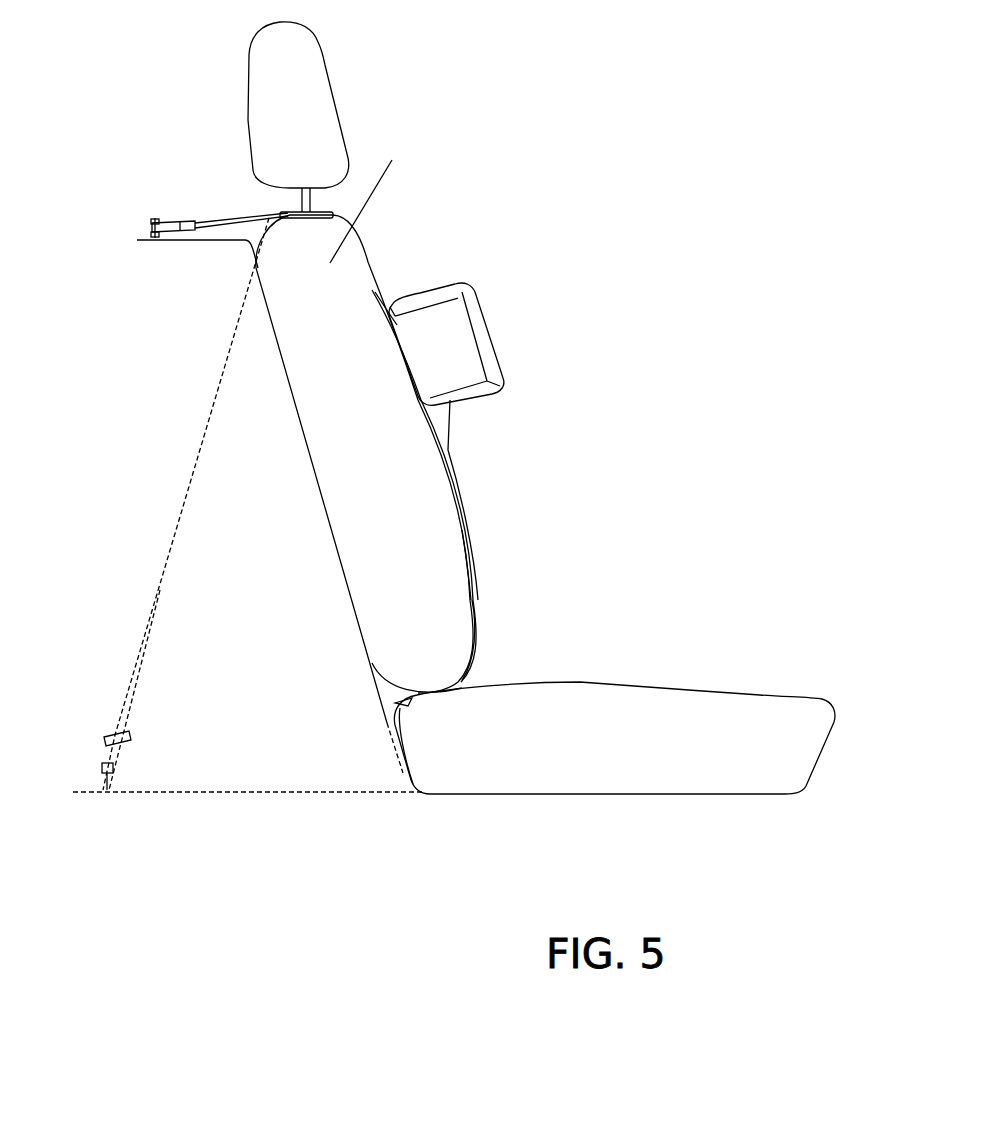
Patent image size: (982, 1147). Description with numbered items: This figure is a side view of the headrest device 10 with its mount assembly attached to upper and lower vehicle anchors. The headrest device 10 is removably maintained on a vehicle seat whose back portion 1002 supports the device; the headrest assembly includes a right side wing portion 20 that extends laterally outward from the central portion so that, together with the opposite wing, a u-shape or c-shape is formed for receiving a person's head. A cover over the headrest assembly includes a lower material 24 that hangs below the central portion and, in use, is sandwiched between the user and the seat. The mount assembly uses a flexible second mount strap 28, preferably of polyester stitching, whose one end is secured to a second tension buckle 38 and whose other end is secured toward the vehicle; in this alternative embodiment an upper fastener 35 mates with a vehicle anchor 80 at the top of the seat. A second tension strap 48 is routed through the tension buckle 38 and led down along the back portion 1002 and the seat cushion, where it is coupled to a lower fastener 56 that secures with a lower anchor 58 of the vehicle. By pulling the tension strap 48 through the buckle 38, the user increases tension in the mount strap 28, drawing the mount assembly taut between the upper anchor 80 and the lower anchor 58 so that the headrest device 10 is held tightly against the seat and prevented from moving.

The headrest device 10 is at (524, 349).
The right side wing portion 20 is at (445, 332).
The lower material 24 is at (449, 450).
The second mount strap 28 is at (368, 262).
The upper fastener 35 is at (172, 222).
The second tension buckle 38 is at (468, 553).
The second tension strap 48 is at (477, 630).
The lower fastener 56 is at (407, 703).
The lower anchor 58 is at (393, 703).
The vehicle anchor 80 is at (156, 218).
The back portion 1002 is at (372, 198).